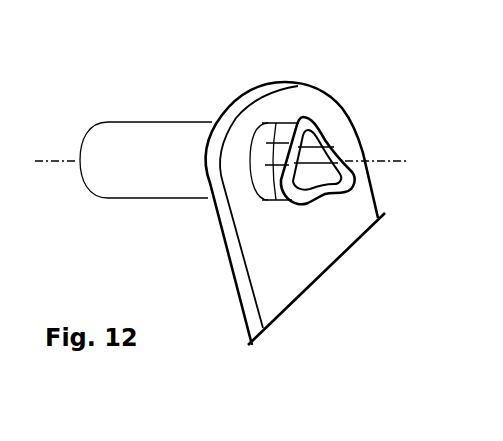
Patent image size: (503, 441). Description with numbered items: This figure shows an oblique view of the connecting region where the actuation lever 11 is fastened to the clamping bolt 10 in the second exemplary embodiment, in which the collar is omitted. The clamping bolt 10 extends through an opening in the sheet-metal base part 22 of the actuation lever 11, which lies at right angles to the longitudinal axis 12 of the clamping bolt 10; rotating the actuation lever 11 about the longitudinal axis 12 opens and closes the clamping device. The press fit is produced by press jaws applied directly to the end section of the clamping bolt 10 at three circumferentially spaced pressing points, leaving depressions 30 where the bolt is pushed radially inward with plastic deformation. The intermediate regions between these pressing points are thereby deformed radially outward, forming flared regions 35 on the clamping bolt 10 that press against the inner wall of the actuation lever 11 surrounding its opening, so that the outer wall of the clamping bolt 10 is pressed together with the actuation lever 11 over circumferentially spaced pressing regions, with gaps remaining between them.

The clamping bolt 10 is at (143, 135).
The actuation lever 11 is at (359, 263).
The longitudinal axis 12 is at (59, 166).
The base part 22 is at (280, 274).
The depressions 30 is at (275, 148).
The flared regions 35 is at (290, 123).